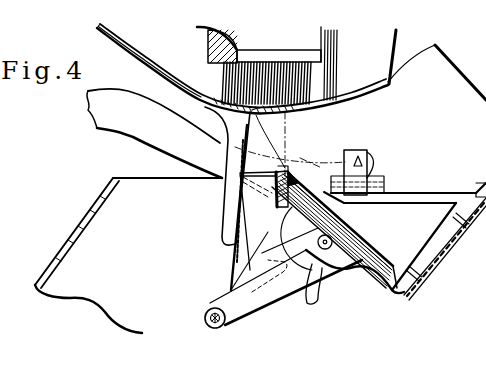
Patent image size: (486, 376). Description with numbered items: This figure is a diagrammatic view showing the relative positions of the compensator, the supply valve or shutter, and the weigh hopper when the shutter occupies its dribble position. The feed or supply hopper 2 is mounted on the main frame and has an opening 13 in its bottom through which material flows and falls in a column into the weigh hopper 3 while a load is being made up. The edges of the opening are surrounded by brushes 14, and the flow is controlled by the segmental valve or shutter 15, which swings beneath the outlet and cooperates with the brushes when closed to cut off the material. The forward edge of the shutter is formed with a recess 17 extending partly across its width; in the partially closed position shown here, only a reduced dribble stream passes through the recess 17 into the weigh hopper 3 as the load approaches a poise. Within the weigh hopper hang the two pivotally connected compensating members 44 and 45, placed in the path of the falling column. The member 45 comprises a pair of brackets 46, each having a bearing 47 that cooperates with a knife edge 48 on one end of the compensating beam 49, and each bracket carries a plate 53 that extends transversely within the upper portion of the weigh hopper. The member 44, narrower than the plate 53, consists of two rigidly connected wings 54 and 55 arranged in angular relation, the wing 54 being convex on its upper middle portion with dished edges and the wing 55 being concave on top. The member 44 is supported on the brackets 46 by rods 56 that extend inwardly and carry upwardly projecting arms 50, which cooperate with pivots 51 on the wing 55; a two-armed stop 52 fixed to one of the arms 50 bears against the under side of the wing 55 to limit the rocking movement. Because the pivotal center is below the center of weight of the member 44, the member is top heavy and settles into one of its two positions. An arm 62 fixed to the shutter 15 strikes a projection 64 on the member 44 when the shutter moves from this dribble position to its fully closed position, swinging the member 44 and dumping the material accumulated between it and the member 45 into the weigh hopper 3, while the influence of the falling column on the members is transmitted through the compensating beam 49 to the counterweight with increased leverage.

The feed or supply hopper 2 is at (208, 30).
The weigh hopper 3 is at (68, 240).
The opening 13 is at (284, 53).
The brushes 14 is at (326, 72).
The valve or shutter 15 is at (143, 71).
The recess 17 is at (346, 103).
The member 44 is at (228, 268).
The member 45 is at (403, 298).
The brackets 46 is at (290, 295).
The bearing 47 is at (378, 162).
The knife edge 48 is at (367, 153).
The compensating beam 49 is at (102, 117).
The arms 50 is at (245, 312).
The pivots 51 is at (356, 265).
The two-armed stop 52 is at (316, 303).
The plate 53 is at (444, 250).
The wing 54 is at (224, 264).
The wing 55 is at (373, 279).
The rods 56 is at (214, 329).
The arm 62 is at (229, 200).
The projection 64 is at (290, 175).